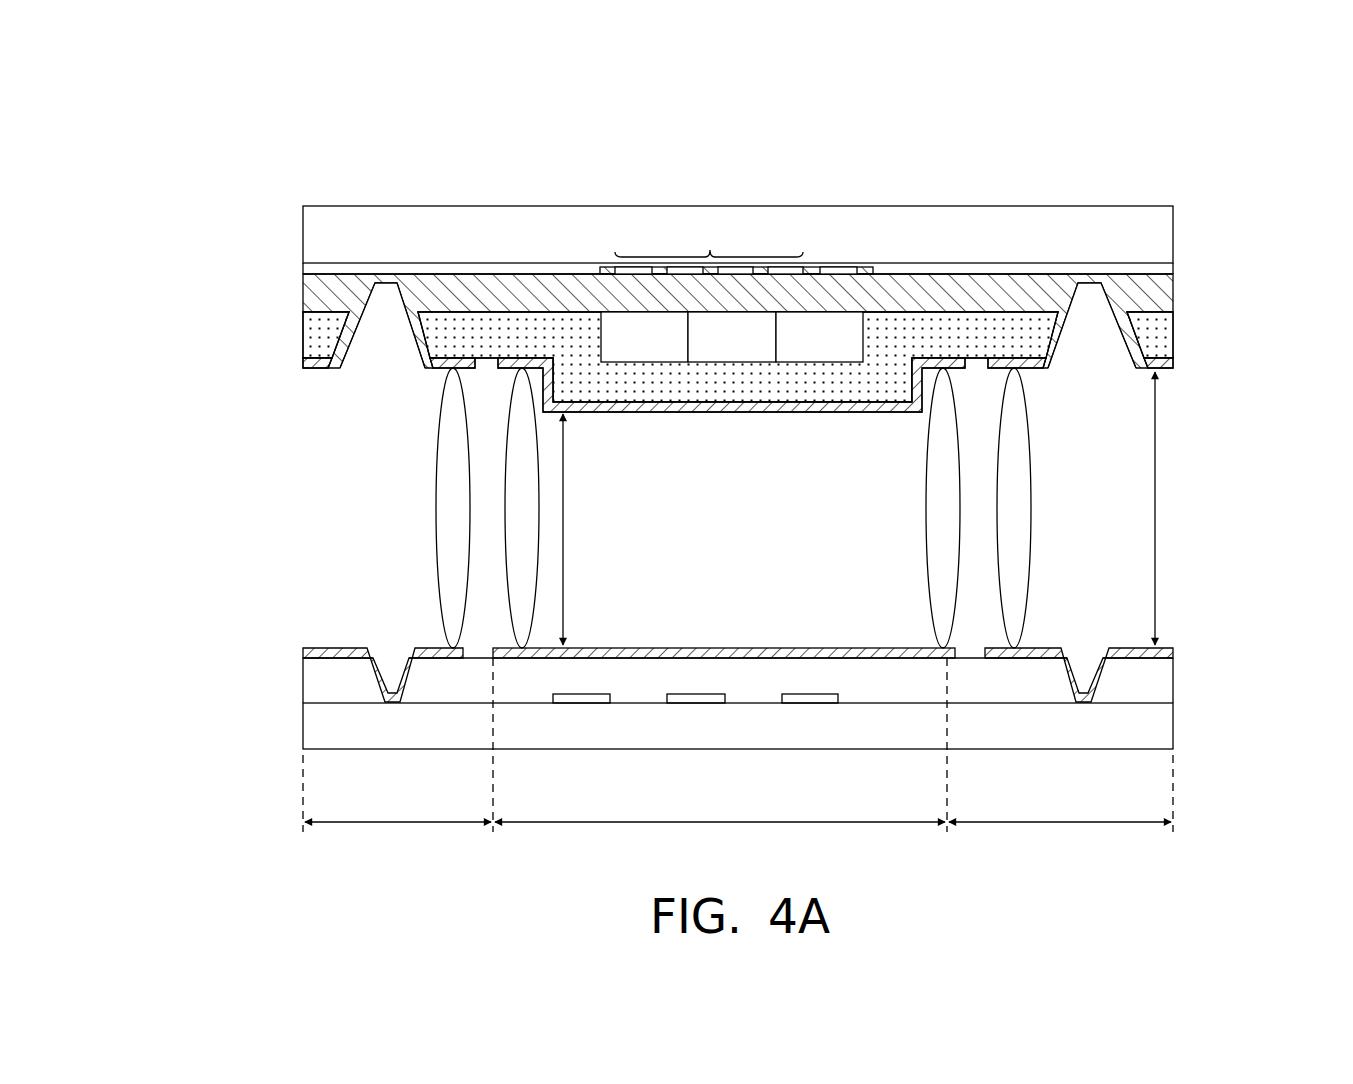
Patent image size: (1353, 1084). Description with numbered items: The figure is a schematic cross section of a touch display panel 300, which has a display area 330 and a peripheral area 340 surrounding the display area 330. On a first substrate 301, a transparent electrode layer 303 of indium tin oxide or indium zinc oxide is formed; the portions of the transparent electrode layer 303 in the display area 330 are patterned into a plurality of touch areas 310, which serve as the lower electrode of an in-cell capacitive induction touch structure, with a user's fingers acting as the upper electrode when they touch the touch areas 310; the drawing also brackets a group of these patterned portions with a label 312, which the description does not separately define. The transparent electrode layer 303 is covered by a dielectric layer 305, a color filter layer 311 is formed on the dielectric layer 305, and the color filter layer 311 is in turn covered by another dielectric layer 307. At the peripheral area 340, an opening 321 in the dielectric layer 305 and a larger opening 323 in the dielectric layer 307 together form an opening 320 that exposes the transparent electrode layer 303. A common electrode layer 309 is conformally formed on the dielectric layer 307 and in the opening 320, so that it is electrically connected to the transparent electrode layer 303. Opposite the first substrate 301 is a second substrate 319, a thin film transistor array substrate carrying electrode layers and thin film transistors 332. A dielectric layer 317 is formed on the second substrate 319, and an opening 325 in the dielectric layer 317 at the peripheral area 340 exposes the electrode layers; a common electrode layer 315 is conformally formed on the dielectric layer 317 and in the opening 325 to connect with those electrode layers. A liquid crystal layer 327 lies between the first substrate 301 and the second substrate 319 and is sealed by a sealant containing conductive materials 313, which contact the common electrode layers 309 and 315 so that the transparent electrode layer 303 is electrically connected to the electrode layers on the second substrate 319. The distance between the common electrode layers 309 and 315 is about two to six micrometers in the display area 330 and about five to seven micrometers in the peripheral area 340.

The touch display panel 300 is at (1170, 151).
The first substrate 301 is at (1165, 237).
The transparent electrode layer 303 is at (1165, 268).
The dielectric layer 305 is at (1165, 293).
The dielectric layer 307 is at (1165, 327).
The common electrode layer 309 is at (1165, 362).
The touch areas 310 is at (633, 270).
The color filter layer 311 is at (781, 308).
The touch sensing layer 312 is at (710, 247).
The conductive materials 313 is at (1025, 510).
The common electrode layer 315 is at (1165, 654).
The dielectric layer 317 is at (1165, 688).
The second substrate 319 is at (1165, 732).
The opening 320 is at (633, 325).
The opening 321 is at (383, 297).
The opening 323 is at (383, 340).
The opening 325 is at (393, 657).
The liquid crystal layer 327 is at (700, 482).
The display area 330 is at (720, 842).
The thin film transistors 332 is at (813, 700).
The peripheral area 340 is at (738, 760).